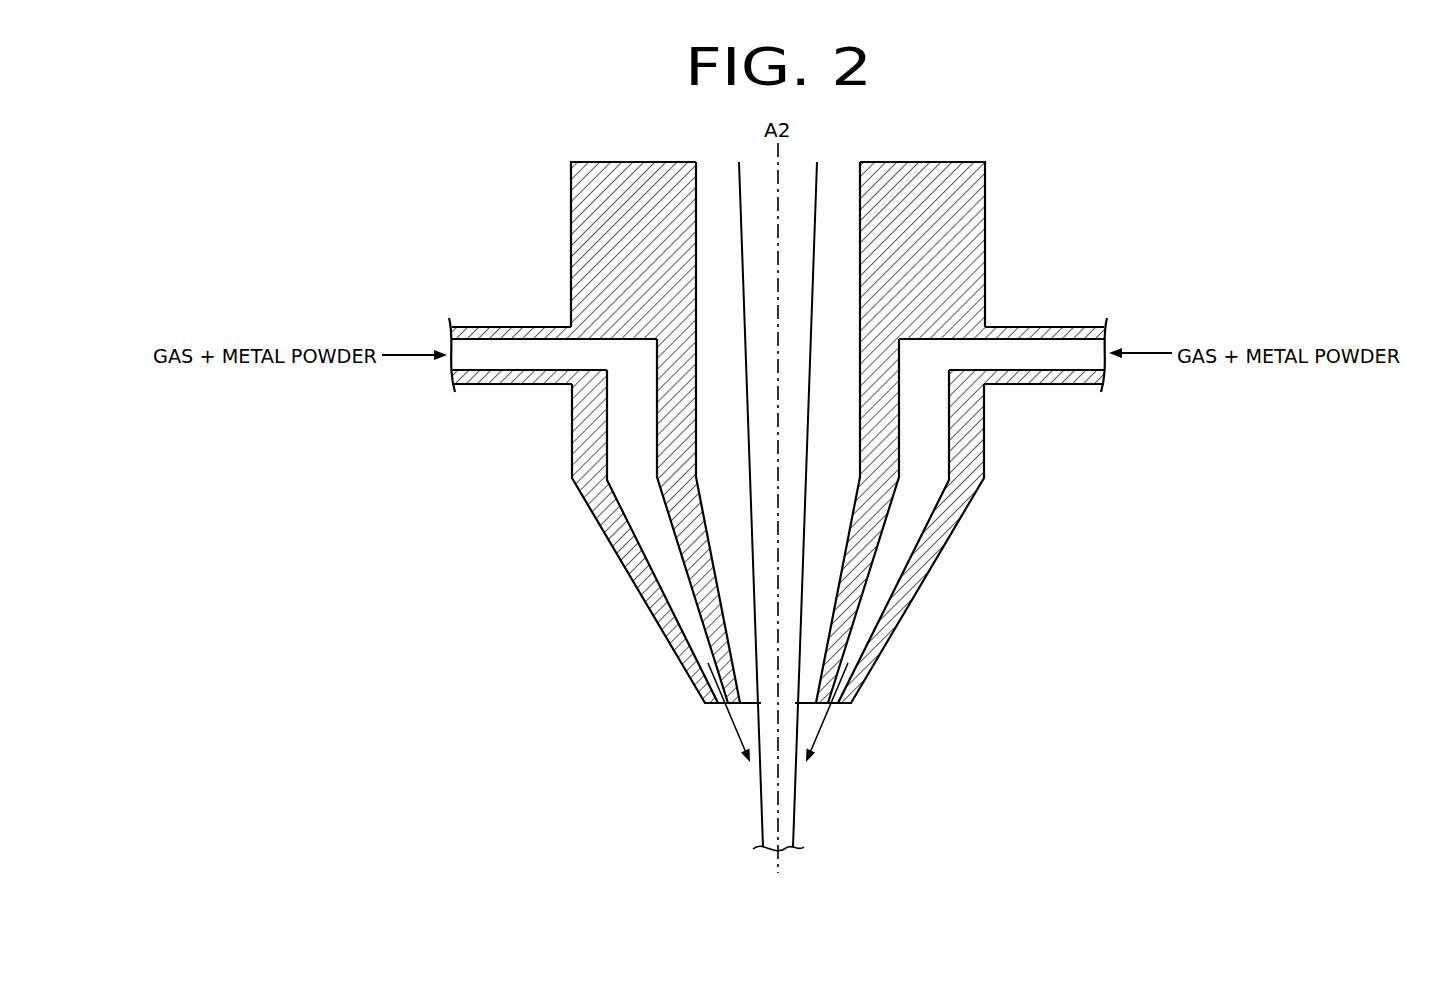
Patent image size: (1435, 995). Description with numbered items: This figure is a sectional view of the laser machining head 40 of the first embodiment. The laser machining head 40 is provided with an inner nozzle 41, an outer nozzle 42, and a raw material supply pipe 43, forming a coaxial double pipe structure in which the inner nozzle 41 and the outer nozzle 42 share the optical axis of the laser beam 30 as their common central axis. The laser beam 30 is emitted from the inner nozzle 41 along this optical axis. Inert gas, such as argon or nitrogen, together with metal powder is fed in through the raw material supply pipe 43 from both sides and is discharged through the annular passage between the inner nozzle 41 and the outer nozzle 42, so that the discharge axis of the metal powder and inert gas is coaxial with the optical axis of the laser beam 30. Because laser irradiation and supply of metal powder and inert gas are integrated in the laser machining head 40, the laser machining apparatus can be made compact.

The laser beam 30 is at (795, 803).
The laser machining head 40 is at (1051, 261).
The inner nozzle 41 is at (656, 428).
The outer nozzle 42 is at (587, 504).
The raw material supply pipe 43 is at (490, 325).